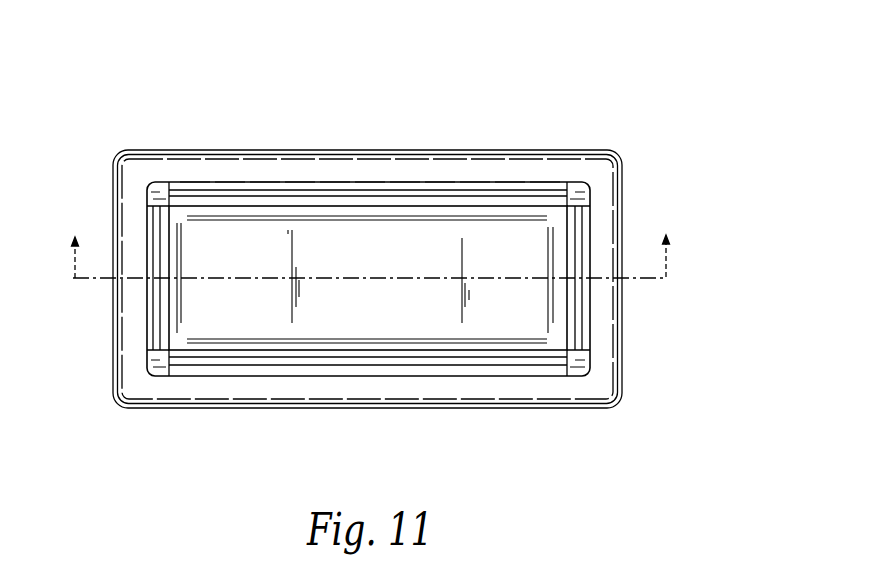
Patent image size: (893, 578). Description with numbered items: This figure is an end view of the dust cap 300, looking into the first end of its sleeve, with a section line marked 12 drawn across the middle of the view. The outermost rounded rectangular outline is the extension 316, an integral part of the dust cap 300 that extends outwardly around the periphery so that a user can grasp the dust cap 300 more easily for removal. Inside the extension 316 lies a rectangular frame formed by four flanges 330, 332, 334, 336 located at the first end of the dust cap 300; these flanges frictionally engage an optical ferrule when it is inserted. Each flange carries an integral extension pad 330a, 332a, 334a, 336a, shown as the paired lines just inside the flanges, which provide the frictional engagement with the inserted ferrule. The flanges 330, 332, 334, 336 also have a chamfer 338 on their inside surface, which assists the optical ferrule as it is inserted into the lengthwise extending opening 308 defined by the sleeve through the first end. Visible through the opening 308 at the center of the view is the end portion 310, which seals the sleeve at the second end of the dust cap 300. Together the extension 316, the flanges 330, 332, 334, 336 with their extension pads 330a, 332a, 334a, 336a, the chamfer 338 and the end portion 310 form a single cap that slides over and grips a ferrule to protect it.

The dust cap 300 is at (697, 137).
The lengthwise extending opening 308 is at (521, 247).
The end portion 310 is at (395, 322).
The extension 316 is at (535, 150).
The flange 330 is at (582, 337).
The extension pad 330a is at (567, 318).
The flange 332 is at (377, 195).
The extension pad 332a is at (333, 198).
The flange 334 is at (165, 321).
The extension pad 334a is at (165, 263).
The flange 336 is at (428, 372).
The extension pad 336a is at (248, 358).
The chamfer 338 is at (266, 202).
The section line 12- 12 is at (372, 256).